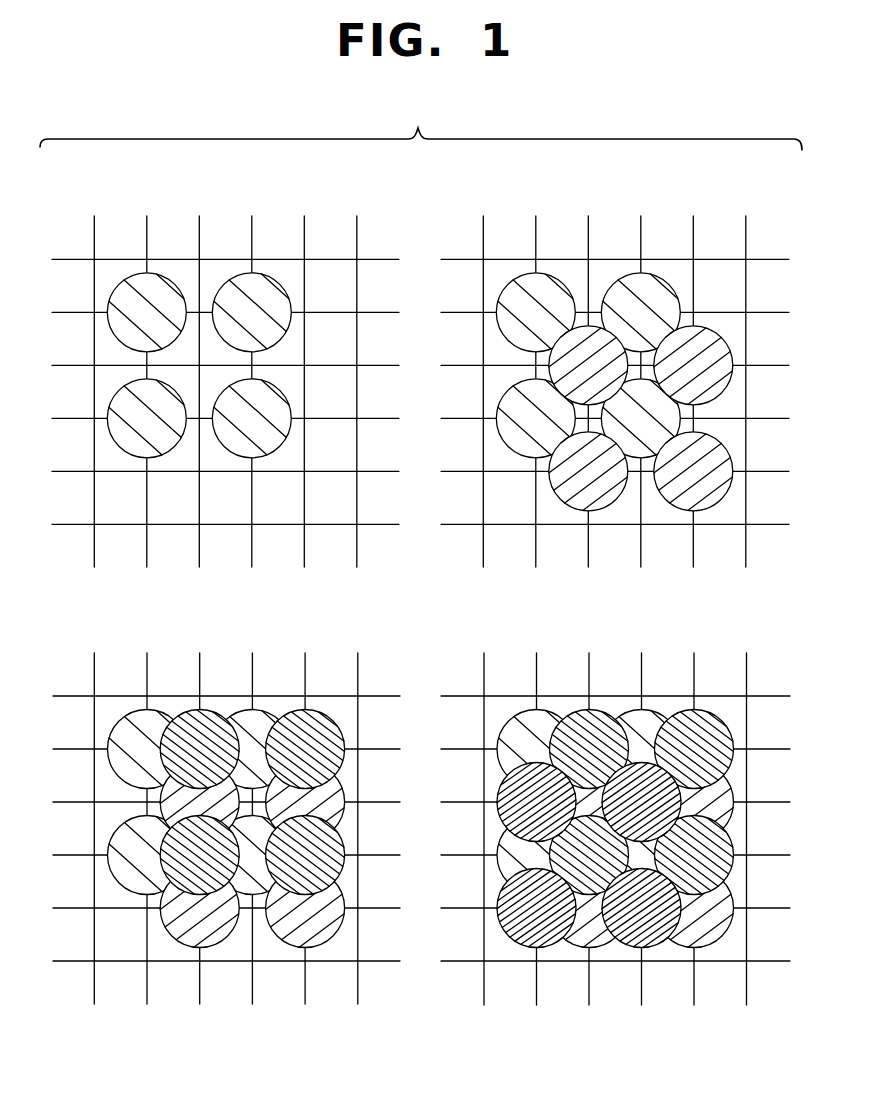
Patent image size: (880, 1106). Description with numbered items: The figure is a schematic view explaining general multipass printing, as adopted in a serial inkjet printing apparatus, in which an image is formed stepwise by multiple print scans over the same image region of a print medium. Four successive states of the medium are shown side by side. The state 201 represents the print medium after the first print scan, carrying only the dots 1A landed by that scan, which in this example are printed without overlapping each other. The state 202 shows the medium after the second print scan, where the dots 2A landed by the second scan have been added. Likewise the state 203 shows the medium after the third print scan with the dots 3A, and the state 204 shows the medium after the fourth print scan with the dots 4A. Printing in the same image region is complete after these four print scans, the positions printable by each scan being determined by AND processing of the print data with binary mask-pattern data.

The state of print medium after first print scan 201 is at (286, 199).
The state of print medium after second print scan 202 is at (676, 199).
The state of print medium after third print scan 203 is at (288, 635).
The state of print medium after fourth print scan 204 is at (676, 635).
The dot landed by first print scan 1A is at (268, 438).
The dot landed by second print scan 2A is at (703, 498).
The dot landed by third print scan 3A is at (298, 727).
The dot landed by fourth print scan 4A is at (650, 942).